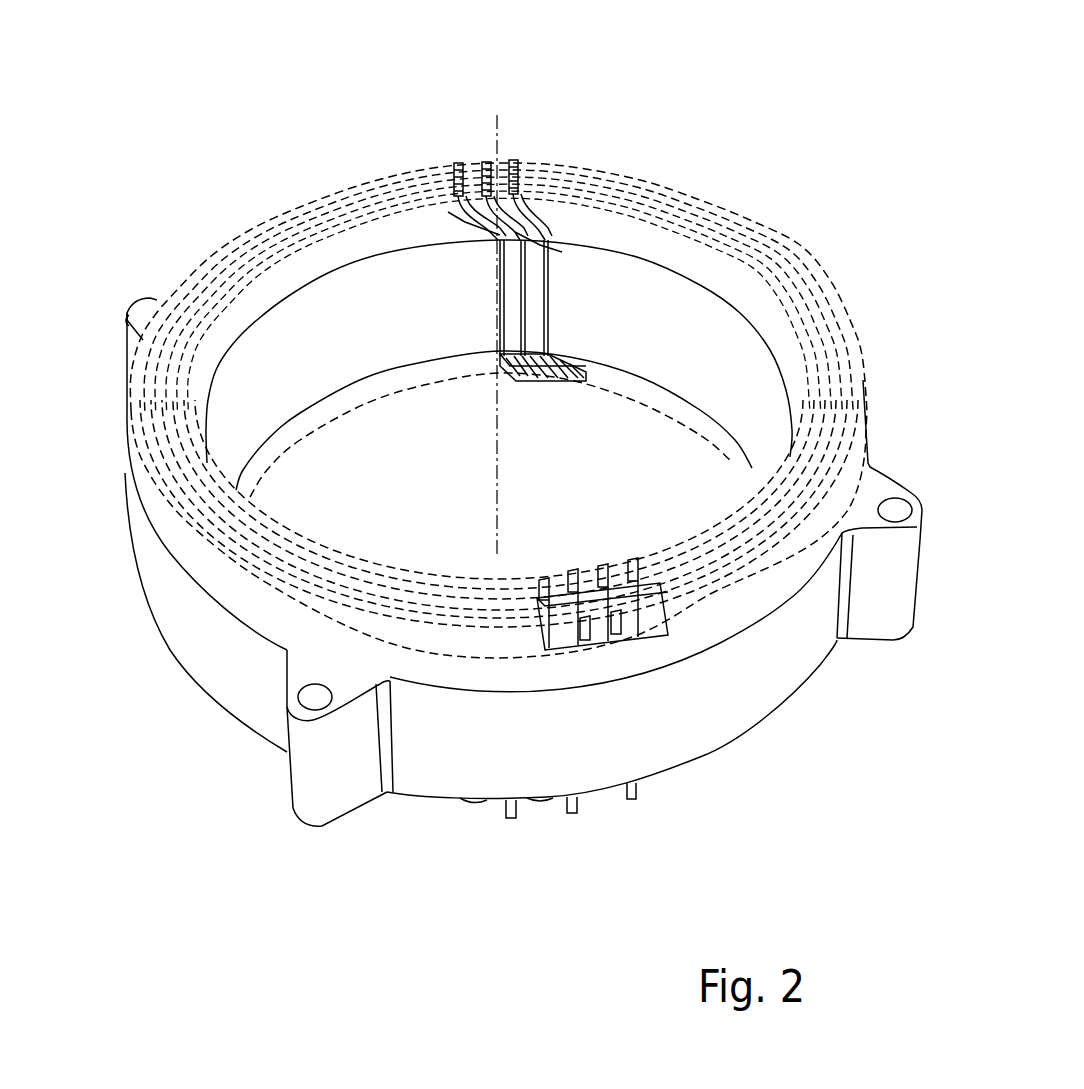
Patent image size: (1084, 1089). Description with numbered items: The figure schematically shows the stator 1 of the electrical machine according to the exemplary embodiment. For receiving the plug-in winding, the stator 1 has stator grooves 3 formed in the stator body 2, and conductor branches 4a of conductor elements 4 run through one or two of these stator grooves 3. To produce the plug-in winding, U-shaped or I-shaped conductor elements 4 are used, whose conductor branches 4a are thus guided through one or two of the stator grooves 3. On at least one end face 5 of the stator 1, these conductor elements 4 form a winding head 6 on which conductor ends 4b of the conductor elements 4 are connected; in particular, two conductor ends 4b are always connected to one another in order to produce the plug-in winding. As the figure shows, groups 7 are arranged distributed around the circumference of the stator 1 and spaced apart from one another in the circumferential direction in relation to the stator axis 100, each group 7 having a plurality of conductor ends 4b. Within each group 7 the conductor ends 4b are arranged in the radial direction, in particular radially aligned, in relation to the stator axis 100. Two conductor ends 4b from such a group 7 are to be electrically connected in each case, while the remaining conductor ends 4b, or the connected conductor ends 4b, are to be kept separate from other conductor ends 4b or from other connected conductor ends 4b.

The stator 1 is at (268, 144).
The stator body 2 is at (283, 332).
The stator grooves 3 is at (480, 290).
The conductor elements 4 is at (534, 380).
The conductor branches 4a is at (498, 312).
The conductor ends 4b is at (735, 775).
The end face 5 is at (146, 500).
The winding head 6 is at (804, 294).
The groups 7 is at (452, 152).
The stator axis 100 is at (497, 505).